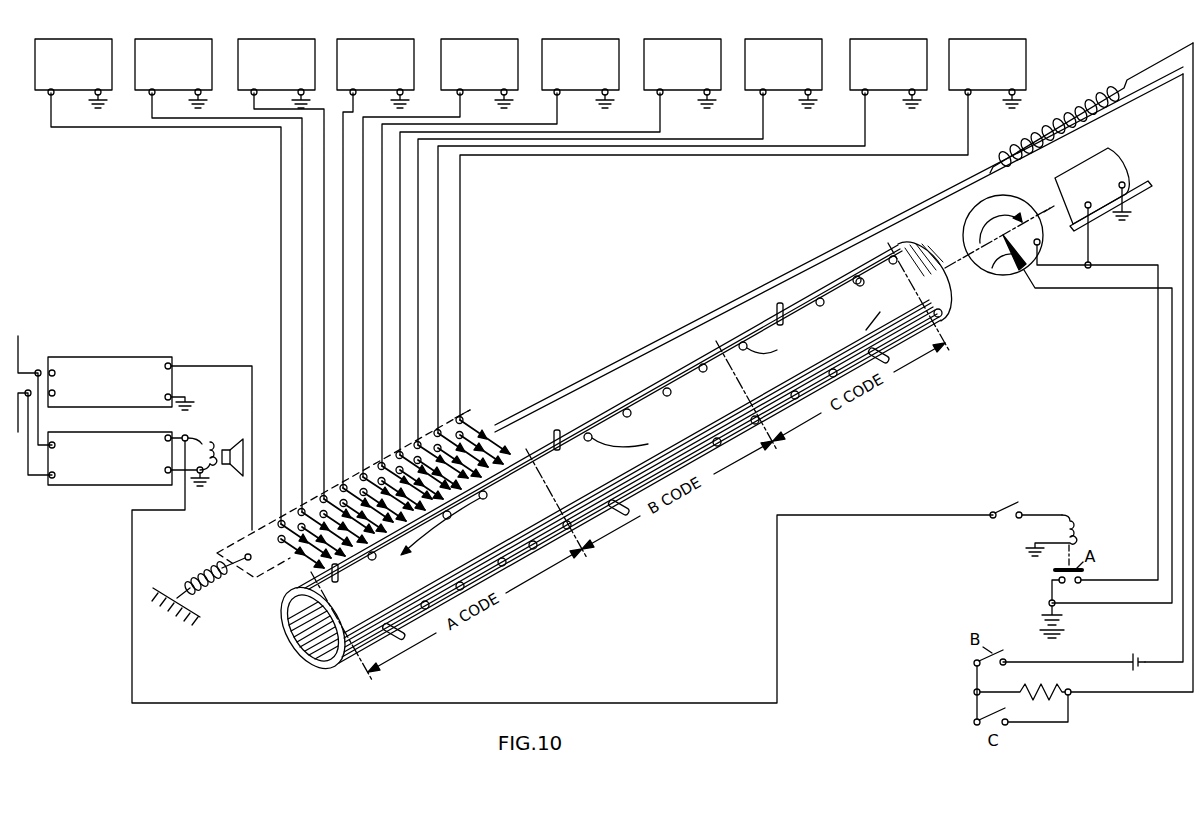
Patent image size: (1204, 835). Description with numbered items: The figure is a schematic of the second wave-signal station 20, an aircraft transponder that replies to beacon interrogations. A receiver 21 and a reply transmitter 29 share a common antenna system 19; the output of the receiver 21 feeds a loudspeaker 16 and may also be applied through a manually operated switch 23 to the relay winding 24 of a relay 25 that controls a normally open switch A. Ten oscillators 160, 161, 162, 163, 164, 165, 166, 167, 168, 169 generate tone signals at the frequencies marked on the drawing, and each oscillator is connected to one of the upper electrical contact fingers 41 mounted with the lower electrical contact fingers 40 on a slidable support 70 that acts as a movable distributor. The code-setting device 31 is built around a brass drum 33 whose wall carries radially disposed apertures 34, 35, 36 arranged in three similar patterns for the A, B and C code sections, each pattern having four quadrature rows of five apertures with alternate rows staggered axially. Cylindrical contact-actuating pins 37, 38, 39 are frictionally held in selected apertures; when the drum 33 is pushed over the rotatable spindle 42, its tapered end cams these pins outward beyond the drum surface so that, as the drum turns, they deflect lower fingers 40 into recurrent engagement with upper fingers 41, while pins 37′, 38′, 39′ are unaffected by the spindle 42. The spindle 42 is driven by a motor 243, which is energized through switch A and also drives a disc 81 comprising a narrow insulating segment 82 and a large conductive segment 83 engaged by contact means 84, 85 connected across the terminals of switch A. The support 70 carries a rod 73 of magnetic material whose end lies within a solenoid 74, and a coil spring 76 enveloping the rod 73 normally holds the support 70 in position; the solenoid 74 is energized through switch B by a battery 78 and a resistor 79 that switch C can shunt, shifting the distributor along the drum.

The oscillator 160 is at (97, 37).
The oscillator 161 is at (195, 37).
The oscillator 162 is at (298, 37).
The oscillator 163 is at (397, 37).
The oscillator 164 is at (501, 37).
The oscillator 165 is at (602, 37).
The oscillator 166 is at (703, 37).
The oscillator 167 is at (805, 37).
The oscillator 168 is at (906, 37).
The oscillator 169 is at (1008, 37).
The antenna system 19 is at (20, 378).
The reply transmitter 29 is at (117, 358).
The receiver 21 is at (117, 431).
The loudspeaker 16 is at (220, 444).
The coil spring 76 is at (210, 580).
The upper electrical contact fingers 41 is at (306, 542).
The lower electrical contact fingers 40 is at (319, 570).
The support 70 is at (493, 414).
The code-setting device 31 is at (667, 377).
The second wave-signal station 20 is at (645, 327).
The apertures 34 is at (469, 550).
The apertures 35 is at (670, 430).
The apertures 36 is at (795, 391).
The drum 33 is at (760, 338).
The pin 38 is at (557, 430).
The pin 38′ is at (627, 410).
The pin 39 is at (782, 304).
The pin 39′ is at (878, 310).
The pin 37 is at (393, 626).
The pin 37′ is at (460, 583).
The spindle 42 is at (950, 264).
The rod 73 is at (888, 220).
The solenoid 74 is at (1087, 101).
The disc 81 is at (974, 225).
The insulating segment 82 is at (993, 270).
The conductive segment 83 is at (1018, 212).
The contact means 84 is at (1021, 279).
The contact means 85 is at (1041, 245).
The motor 243 is at (1072, 172).
The switch 23 is at (1004, 508).
The relay winding 24 is at (1073, 518).
The relay 25 is at (1076, 522).
The battery 78 is at (1138, 656).
The resistor 79 is at (1046, 697).